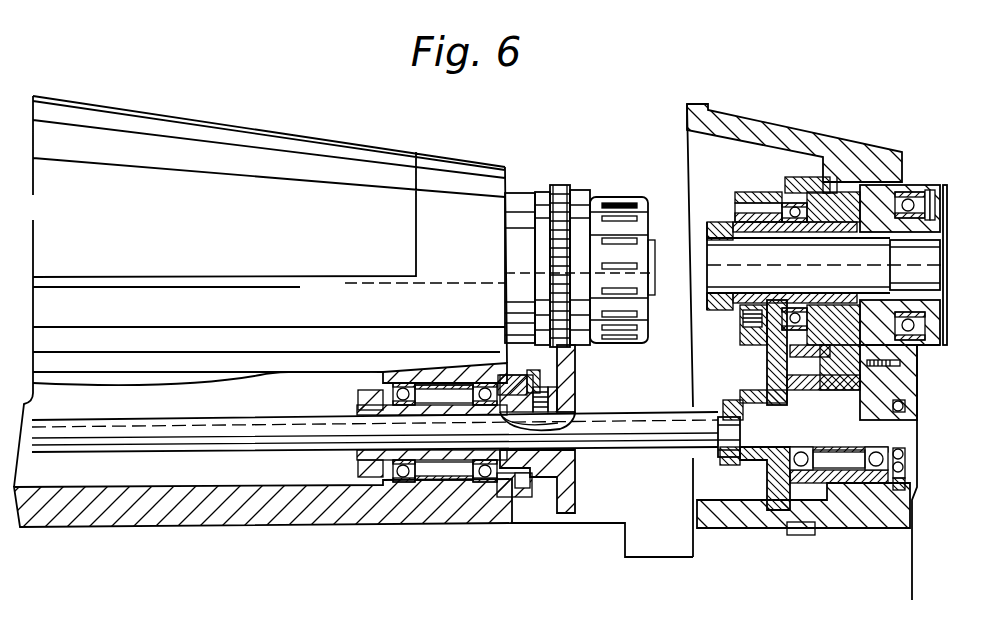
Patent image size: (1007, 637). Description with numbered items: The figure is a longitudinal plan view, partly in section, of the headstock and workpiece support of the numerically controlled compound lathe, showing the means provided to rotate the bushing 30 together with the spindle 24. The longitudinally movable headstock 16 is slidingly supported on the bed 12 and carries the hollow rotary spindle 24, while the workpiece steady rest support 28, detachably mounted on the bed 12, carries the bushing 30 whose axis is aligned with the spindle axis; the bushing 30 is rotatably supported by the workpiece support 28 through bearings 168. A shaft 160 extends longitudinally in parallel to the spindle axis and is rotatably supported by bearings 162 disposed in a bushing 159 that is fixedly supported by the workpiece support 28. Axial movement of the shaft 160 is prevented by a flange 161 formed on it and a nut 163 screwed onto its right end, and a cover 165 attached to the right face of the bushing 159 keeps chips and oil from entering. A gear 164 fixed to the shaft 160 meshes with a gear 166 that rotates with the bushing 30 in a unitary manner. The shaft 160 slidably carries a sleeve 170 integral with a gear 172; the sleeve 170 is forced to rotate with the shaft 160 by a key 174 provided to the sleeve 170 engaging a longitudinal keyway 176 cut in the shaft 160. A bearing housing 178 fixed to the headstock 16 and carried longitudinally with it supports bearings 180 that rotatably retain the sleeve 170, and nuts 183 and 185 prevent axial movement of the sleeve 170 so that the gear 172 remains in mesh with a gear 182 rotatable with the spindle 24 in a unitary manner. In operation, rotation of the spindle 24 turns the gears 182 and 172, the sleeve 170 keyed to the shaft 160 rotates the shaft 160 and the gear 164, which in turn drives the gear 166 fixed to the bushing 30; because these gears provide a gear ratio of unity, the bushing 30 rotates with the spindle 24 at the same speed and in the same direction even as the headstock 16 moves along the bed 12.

The bed 12 is at (905, 565).
The headstock 16 is at (457, 160).
The hollow rotary spindle 24 is at (620, 197).
The workpiece steady rest support 28 is at (830, 135).
The bushing 30 is at (922, 268).
The bushing 159 is at (915, 378).
The shaft 160 is at (660, 440).
The flange 161 is at (722, 405).
The bearings 162 is at (800, 447).
The nut 163 is at (905, 470).
The gear 164 is at (770, 493).
The cover 165 is at (905, 490).
The gear 166 is at (755, 340).
The bearings 168 is at (752, 192).
The sleeve 170 is at (383, 482).
The gear 172 is at (576, 490).
The key 174 is at (575, 398).
The longitudinal keyway 176 is at (650, 420).
The bearing housing 178 is at (440, 372).
The bearings 180 is at (400, 385).
The gear 182 is at (578, 345).
The nut 183 is at (362, 468).
The nut 185 is at (522, 493).